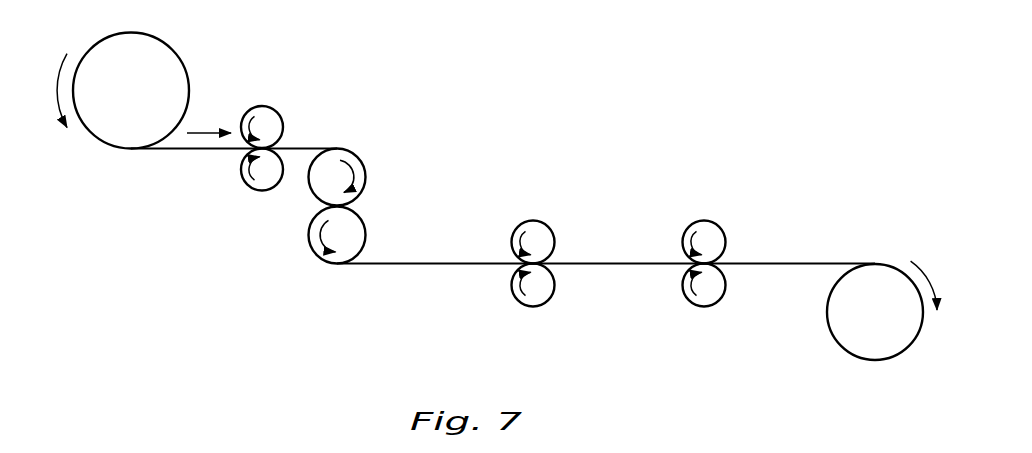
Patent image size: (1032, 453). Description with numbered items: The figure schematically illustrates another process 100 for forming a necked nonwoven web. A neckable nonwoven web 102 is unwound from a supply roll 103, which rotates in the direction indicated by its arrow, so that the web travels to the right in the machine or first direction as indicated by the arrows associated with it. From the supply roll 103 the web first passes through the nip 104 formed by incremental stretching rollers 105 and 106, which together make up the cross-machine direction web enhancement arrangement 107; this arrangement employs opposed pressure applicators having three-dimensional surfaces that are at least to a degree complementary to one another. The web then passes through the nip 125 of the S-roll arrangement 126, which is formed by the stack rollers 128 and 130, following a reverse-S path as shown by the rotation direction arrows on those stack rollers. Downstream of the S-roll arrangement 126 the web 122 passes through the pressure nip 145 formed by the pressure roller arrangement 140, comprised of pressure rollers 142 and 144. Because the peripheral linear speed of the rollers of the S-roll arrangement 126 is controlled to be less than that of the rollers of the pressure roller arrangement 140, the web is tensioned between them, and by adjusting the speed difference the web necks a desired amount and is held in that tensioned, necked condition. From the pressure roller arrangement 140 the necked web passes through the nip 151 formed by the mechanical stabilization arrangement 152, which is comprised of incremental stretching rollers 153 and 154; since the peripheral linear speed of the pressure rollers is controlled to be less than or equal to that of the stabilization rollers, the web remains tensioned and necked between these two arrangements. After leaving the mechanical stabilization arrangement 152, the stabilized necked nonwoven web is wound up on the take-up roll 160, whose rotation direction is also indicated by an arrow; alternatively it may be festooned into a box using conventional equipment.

The process 100 is at (356, 120).
The neckable nonwoven web 102 is at (171, 152).
The supply roll 103 is at (167, 44).
The nip 104 is at (241, 154).
The incremental stretching roller 105 is at (267, 107).
The incremental stretching roller 106 is at (263, 193).
The cross-machine direction web enhancement arrangement 107 is at (248, 100).
The coated web 122 is at (408, 266).
The nip 125 is at (359, 207).
The S-roll arrangement 126 is at (302, 225).
The stack roller 128 is at (360, 156).
The stack roller 130 is at (366, 245).
The pressure roller arrangement 140 is at (568, 241).
The pressure roller 142 is at (532, 308).
The pressure roller 144 is at (538, 221).
The pressure nip 145 is at (512, 269).
The nip 151 is at (686, 268).
The mechanical stabilization arrangement 152 is at (740, 241).
The incremental stretching roller 153 is at (710, 221).
The incremental stretching roller 154 is at (718, 305).
The take-up roll 160 is at (867, 360).